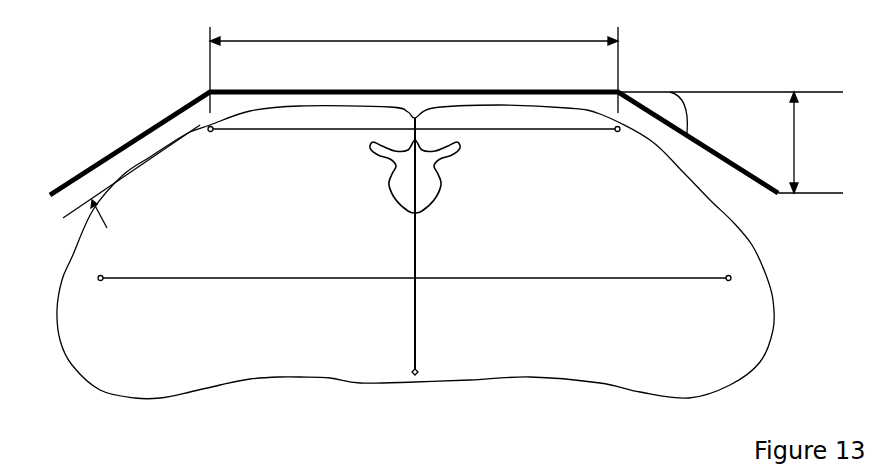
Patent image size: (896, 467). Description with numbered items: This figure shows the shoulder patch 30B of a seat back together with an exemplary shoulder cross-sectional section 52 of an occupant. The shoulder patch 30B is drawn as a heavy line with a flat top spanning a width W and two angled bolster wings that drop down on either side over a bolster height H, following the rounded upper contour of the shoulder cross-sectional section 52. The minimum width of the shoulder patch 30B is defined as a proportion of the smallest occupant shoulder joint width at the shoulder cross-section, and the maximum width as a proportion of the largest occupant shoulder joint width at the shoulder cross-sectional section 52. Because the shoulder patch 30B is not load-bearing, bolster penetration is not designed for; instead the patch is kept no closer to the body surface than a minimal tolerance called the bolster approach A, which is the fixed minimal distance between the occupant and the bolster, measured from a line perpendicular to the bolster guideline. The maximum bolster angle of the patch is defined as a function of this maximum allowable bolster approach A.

The shoulder patch 30B is at (150, 127).
The shoulder cross-sectional section 52 is at (132, 398).
The bolster approach A is at (63, 138).
The width W is at (414, 70).
The wing/bolster height H is at (730, 142).